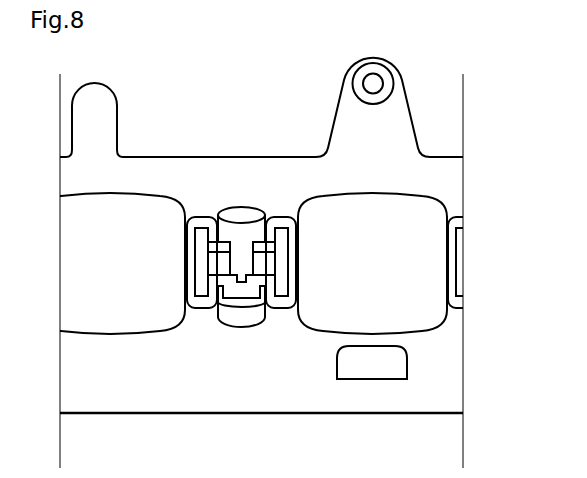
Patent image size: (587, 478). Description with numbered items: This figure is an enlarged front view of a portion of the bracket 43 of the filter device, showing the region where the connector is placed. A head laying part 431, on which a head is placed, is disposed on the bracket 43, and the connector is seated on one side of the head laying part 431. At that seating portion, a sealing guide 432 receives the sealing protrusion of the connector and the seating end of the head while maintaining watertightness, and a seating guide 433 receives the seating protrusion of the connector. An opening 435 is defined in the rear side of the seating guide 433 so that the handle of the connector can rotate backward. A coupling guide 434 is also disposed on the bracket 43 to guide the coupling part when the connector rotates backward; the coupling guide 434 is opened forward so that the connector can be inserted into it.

The bracket 43 is at (370, 143).
The head laying part 431 is at (123, 321).
The sealing guide 432 is at (200, 290).
The seating guide 433 is at (243, 283).
The coupling guide 434 is at (262, 252).
The opening 435 is at (241, 228).